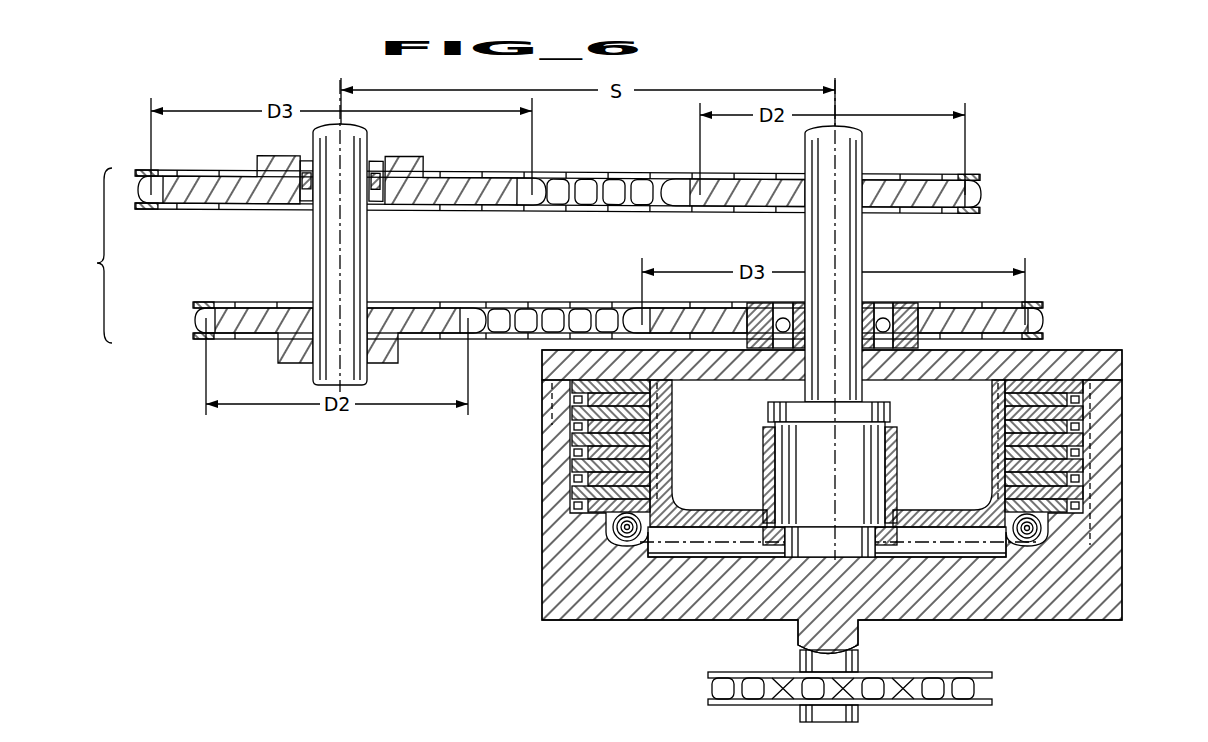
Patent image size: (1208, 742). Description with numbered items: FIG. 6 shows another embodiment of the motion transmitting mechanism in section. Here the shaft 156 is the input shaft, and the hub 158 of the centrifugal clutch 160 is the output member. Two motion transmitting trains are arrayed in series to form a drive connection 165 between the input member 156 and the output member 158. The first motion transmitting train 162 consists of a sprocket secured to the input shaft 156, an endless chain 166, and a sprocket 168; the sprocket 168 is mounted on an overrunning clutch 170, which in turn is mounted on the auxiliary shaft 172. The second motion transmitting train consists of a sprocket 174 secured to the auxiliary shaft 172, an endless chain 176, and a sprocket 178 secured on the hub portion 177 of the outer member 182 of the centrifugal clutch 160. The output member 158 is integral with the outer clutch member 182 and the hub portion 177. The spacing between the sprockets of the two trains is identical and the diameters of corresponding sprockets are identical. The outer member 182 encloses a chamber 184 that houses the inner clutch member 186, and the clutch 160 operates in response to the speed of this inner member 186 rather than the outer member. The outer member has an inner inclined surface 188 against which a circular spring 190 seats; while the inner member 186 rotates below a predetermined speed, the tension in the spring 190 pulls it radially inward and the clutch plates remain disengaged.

The input shaft 156 is at (848, 253).
The hub 158 is at (860, 652).
The centrifugal clutch 160 is at (542, 582).
The first motion transmitting train 162 is at (573, 178).
The drive connection 165 is at (78, 255).
The endless chain 166 is at (622, 177).
The sprocket 168 is at (448, 180).
The overrunning clutch 170 is at (306, 166).
The auxiliary shaft 172 is at (327, 260).
The sprocket 174 is at (408, 315).
The endless chain 176 is at (535, 301).
The hub portion 177 is at (758, 306).
The sprocket 178 is at (955, 318).
The outer member 182 is at (1122, 425).
The chamber 184 is at (915, 537).
The inner member 186 is at (663, 413).
The inner inclined surface 188 is at (640, 547).
The circular spring 190 is at (606, 528).